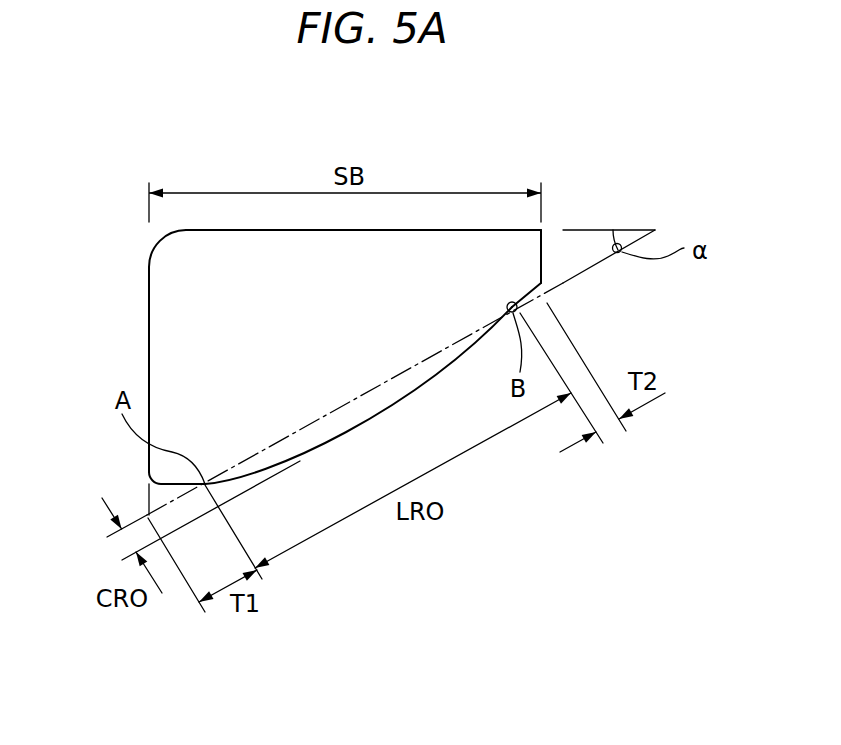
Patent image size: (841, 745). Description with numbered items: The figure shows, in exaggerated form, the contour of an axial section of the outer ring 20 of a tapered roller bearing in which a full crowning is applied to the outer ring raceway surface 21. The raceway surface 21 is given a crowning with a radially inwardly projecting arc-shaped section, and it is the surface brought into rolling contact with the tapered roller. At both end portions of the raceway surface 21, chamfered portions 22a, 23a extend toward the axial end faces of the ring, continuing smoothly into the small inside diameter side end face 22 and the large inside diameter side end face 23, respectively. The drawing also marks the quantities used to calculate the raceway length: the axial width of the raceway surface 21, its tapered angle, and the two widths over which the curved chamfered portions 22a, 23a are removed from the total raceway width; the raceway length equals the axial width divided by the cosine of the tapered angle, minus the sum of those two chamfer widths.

The outer ring 20 is at (658, 162).
The outer ring raceway surface 21 is at (423, 388).
The small inside diameter side end face 22 is at (148, 327).
The chamfered portion 22a is at (153, 483).
The large inside diameter side end face 23 is at (542, 256).
The chamfered portion 23a is at (541, 289).